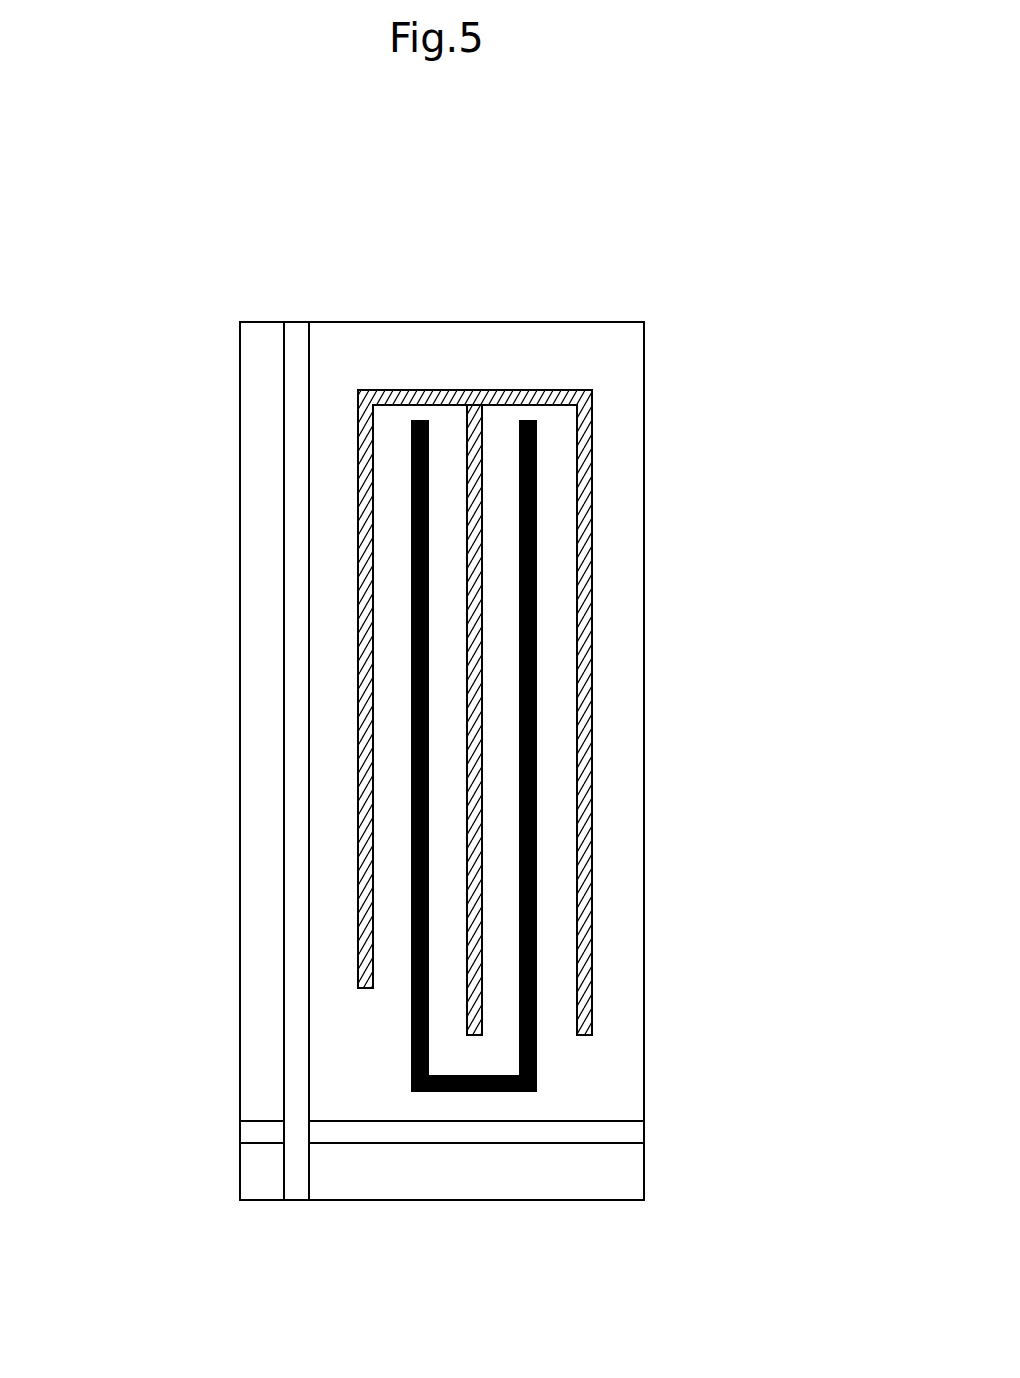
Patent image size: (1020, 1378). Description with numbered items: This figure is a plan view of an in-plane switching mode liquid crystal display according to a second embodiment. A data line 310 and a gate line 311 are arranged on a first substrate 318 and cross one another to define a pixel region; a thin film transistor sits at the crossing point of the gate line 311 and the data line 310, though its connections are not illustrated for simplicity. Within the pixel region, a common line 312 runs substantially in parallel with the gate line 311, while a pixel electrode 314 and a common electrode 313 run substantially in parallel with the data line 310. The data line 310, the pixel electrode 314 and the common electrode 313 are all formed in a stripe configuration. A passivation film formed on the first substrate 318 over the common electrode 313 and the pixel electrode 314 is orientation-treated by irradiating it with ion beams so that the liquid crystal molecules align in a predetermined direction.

The data line 310 is at (297, 695).
The gate line 311 is at (445, 1130).
The common line 312 is at (482, 403).
The common electrode 313 is at (590, 618).
The pixel electrode 314 is at (537, 843).
The first substrate 318 is at (423, 322).